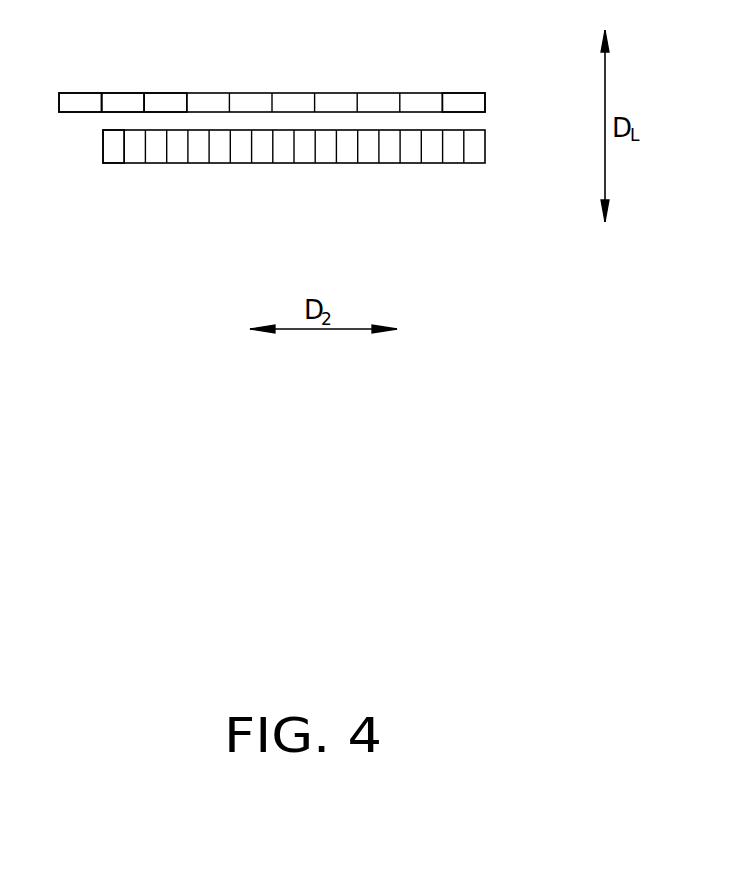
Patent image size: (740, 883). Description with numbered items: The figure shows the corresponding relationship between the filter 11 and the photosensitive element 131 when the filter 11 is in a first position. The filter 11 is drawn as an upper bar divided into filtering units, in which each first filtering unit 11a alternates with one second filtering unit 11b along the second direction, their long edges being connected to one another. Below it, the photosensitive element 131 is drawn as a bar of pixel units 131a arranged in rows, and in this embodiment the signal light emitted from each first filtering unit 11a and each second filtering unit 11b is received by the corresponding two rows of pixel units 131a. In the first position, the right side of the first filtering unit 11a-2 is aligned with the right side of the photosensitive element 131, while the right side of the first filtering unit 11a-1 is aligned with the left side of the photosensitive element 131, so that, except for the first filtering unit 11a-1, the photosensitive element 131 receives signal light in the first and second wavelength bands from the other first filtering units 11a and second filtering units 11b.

The filter 11 is at (486, 101).
The first filtering unit 11a is at (183, 100).
The first filtering unit 11a-1 is at (89, 98).
The first filtering unit 11a-2 is at (468, 100).
The second filtering unit 11b is at (128, 100).
The photosensitive element 131 is at (486, 148).
The pixel unit 131a is at (114, 160).